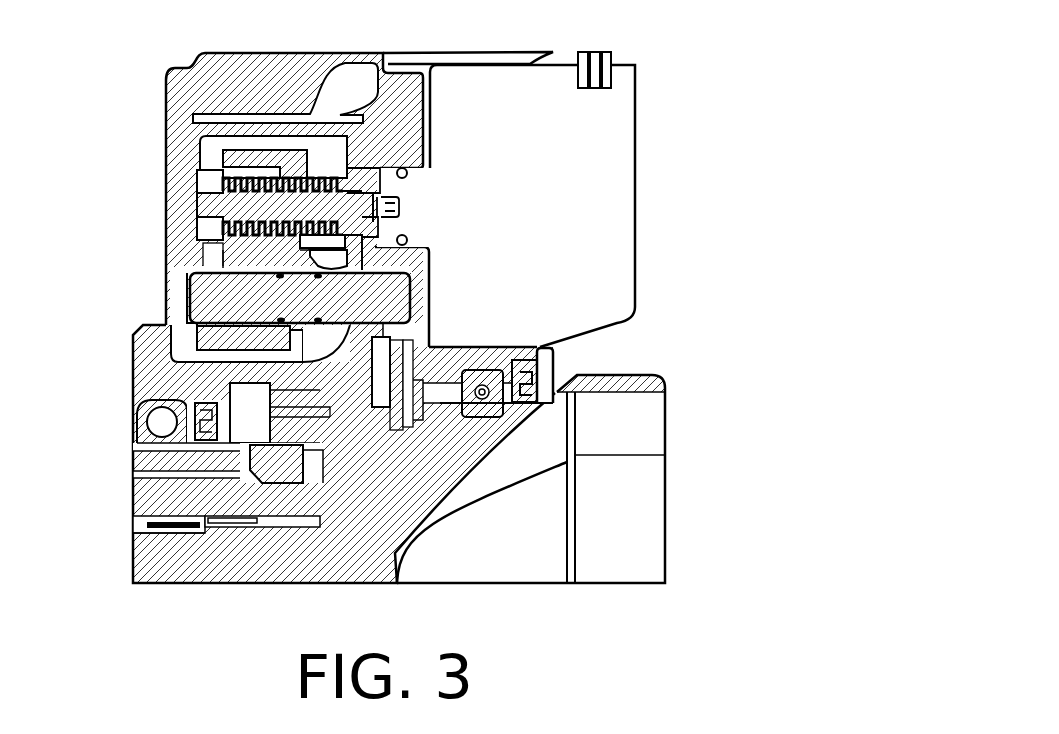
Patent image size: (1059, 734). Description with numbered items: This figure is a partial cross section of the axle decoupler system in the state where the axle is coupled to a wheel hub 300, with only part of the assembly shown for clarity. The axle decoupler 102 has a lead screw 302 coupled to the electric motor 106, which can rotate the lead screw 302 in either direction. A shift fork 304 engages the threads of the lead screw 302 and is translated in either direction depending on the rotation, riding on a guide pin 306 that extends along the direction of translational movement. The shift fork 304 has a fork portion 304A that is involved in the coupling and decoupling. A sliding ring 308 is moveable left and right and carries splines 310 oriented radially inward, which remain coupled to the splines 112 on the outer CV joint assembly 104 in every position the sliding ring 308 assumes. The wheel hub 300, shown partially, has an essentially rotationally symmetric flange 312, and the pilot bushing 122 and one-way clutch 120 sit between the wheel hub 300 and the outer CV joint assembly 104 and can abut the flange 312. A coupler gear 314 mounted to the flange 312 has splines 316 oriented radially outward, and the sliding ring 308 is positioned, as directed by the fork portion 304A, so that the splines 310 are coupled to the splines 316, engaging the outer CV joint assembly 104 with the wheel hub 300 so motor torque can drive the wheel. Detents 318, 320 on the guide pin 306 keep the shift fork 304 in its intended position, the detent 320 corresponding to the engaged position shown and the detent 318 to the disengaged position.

The axle decoupler 102 is at (659, 64).
The outer CV joint assembly 104 is at (694, 493).
The electric motor 106 is at (635, 192).
The splines 112 is at (433, 440).
The one-way clutch 120 is at (175, 535).
The pilot bushing 122 is at (243, 525).
The wheel hub 300 is at (133, 492).
The lead screw 302 is at (227, 187).
The shift fork 304 is at (217, 163).
The fork portion 304A is at (410, 357).
The guide pin 306 is at (400, 283).
The sliding ring 308 is at (367, 407).
The splines 310 is at (362, 440).
The flange 312 is at (280, 497).
The coupler gear 314 is at (280, 460).
The splines 316 is at (278, 427).
The detent 318 is at (278, 318).
The detent 320 is at (298, 318).